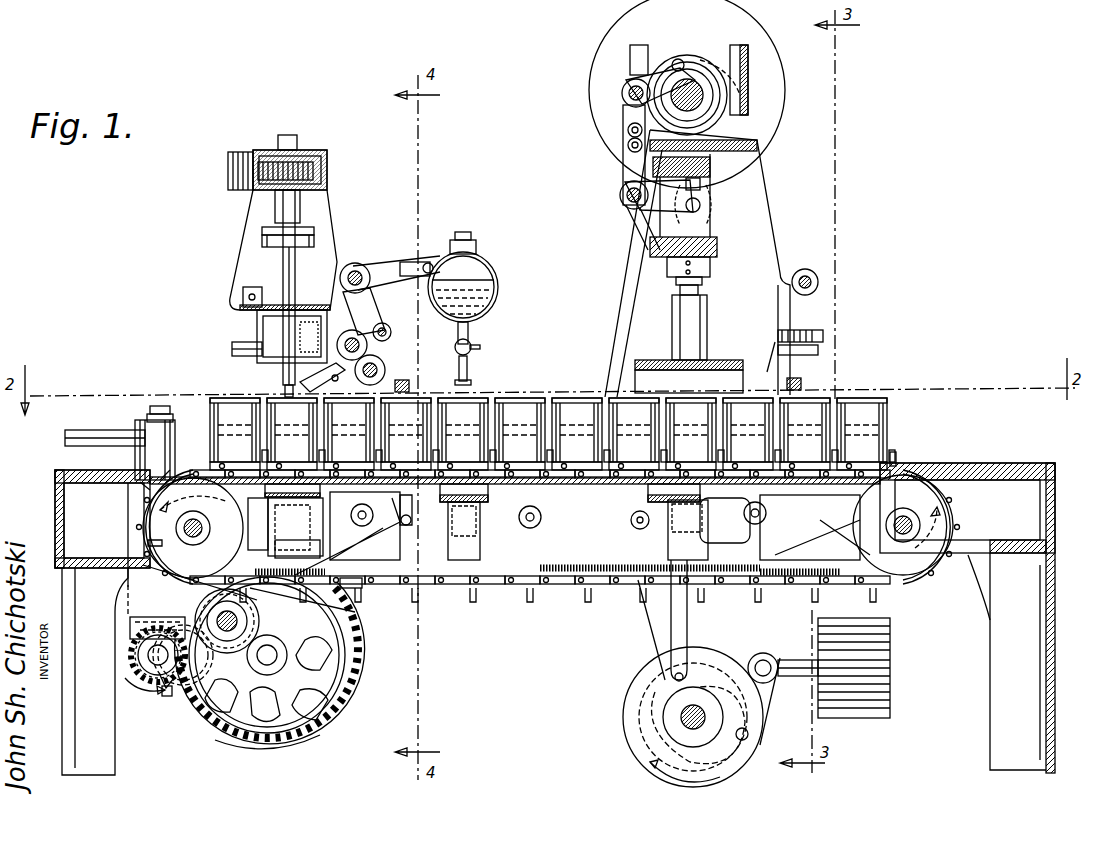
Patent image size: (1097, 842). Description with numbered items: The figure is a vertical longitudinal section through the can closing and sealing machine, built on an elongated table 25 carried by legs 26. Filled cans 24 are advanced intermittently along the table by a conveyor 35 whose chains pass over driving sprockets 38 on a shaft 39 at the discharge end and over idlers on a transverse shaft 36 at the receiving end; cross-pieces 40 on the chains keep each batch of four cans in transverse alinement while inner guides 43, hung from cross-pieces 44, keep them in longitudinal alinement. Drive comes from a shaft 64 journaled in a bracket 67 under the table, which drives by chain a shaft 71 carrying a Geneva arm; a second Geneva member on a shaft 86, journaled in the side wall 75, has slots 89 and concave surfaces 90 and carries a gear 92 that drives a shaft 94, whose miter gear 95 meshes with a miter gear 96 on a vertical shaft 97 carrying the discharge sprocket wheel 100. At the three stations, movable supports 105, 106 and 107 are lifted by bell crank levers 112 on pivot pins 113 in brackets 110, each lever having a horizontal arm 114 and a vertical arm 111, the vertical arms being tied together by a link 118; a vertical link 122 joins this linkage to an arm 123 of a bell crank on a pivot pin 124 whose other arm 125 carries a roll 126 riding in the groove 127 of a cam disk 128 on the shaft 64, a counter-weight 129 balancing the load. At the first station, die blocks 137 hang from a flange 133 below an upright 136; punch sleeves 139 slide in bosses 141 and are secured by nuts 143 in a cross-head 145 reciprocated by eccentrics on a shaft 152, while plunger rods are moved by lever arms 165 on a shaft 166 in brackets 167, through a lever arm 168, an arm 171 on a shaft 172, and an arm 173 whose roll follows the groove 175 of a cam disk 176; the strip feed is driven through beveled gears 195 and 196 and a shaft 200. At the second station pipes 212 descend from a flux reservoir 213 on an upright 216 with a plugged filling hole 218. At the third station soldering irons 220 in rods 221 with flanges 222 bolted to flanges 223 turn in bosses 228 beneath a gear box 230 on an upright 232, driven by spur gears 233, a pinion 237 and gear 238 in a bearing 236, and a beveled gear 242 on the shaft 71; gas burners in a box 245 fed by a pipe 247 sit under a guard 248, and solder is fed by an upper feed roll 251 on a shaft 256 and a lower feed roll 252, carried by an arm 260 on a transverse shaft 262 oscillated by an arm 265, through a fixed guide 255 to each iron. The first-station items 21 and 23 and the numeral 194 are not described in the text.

The valve stem 21 is at (468, 375).
The feed bar 23 is at (88, 430).
The filled cans 24 is at (225, 425).
The table 25 is at (975, 462).
The legs 26 is at (113, 750).
The conveyor 35 is at (605, 575).
The transverse shaft 36 is at (912, 525).
The driving sprockets 38 is at (155, 543).
The transversely arranged shaft 39 is at (185, 528).
The cross-pieces 40 is at (530, 595).
The inner guides 43 is at (612, 385).
The cross-pieces 44 is at (402, 380).
The shaft 64 is at (680, 720).
The bracket 67 is at (658, 638).
The transversely arranged shaft 71 is at (240, 620).
The side wall 75 is at (278, 652).
The shaft 86 is at (330, 668).
The slots 89 is at (295, 737).
The concave surfaces 90 is at (262, 720).
The gear 92 is at (350, 618).
The shaft 94 is at (148, 655).
The miter gear 95 is at (172, 696).
The miter gear 96 is at (135, 620).
The vertically arranged shaft 97 is at (160, 406).
The sprocket wheel 100 is at (140, 420).
The movable support 105 is at (670, 498).
The movable support 106 is at (430, 520).
The movable support 107 is at (294, 518).
The brackets 110 is at (358, 552).
The vertically arranged arm 111 is at (370, 560).
The bell crank levers 112 is at (485, 522).
The pivot pins 113 is at (365, 513).
The horizontally arranged arm 114 is at (260, 525).
The link 118 is at (670, 560).
The vertically arranged link 122 is at (688, 650).
The arm 123 is at (760, 652).
The pivot pin 124 is at (772, 675).
The arm 125 is at (768, 708).
The roll 126 is at (740, 762).
The groove 127 is at (640, 742).
The cam disk 128 is at (625, 692).
The counter-weight 129 is at (892, 642).
The horizontally extending flange 133 is at (725, 360).
The upright 136 is at (770, 240).
The rectangular blocks 137 is at (648, 378).
The sleeves 139 is at (705, 283).
The bosses 141 is at (700, 315).
The nuts 143 is at (668, 268).
The cross-head 145 is at (710, 205).
The shaft 152 is at (700, 100).
The lever arm 165 is at (652, 207).
The shaft 166 is at (620, 195).
The brackets 167 is at (648, 232).
The lever arm 168 is at (632, 172).
The arm 171 is at (628, 150).
The shaft 172 is at (622, 93).
The arm 173 is at (655, 72).
The groove 175 is at (705, 115).
The cam disk 176 is at (705, 58).
The head block 194 is at (712, 242).
The beveled gear 195 is at (800, 335).
The beveled gear 196 is at (800, 352).
The shaft 200 is at (808, 272).
The pipes 212 is at (470, 334).
The reservoir 213 is at (497, 290).
The upright 216 is at (480, 347).
The plugged hole 218 is at (470, 238).
The soldering irons 220 is at (285, 388).
The rods 221 is at (295, 290).
The disk-like flange 222 is at (316, 246).
The flange 223 is at (314, 231).
The bosses 228 is at (300, 205).
The gear box 230 is at (327, 168).
The upright 232 is at (232, 262).
The spur gear 233 is at (305, 160).
The bearing 236 is at (194, 502).
The pinion 237 is at (332, 588).
The gear 238 is at (290, 606).
The beveled gear 242 is at (188, 655).
The box-like structure 245 is at (257, 332).
The pipe 247 is at (232, 349).
The guard 248 is at (348, 298).
The upper feed roll 251 is at (375, 328).
The lower feed roll 252 is at (380, 362).
The fixed guide 255 is at (328, 386).
The shaft 256 is at (344, 342).
The arm 260 is at (370, 276).
The transverse shaft 262 is at (368, 265).
The arm 265 is at (405, 268).